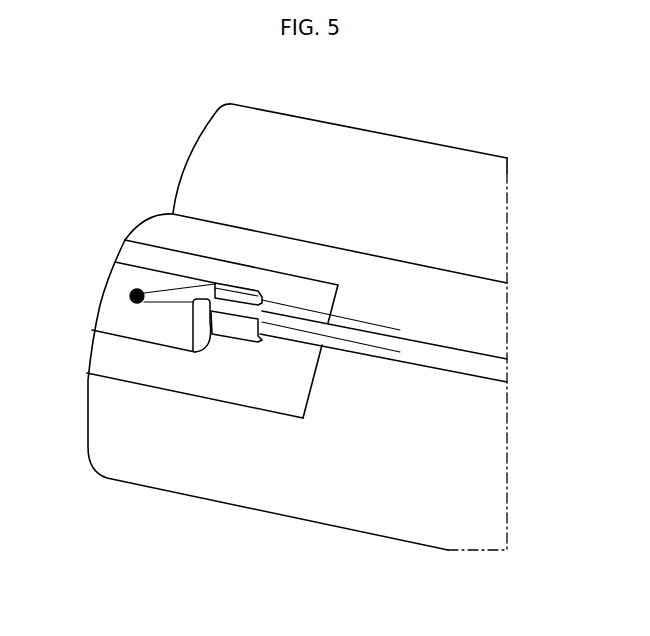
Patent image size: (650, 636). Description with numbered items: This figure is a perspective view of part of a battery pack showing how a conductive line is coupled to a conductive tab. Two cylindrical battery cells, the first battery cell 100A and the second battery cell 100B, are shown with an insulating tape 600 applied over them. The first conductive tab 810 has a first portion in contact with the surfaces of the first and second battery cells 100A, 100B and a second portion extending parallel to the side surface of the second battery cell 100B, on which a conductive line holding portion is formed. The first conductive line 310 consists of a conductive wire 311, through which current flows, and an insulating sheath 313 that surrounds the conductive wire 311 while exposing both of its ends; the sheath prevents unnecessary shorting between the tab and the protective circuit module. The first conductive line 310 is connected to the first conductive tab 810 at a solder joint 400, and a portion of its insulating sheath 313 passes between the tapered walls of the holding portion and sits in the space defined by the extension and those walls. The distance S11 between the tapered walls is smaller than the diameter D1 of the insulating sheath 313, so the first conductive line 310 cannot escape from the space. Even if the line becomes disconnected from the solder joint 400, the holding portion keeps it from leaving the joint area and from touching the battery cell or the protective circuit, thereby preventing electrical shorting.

The first battery cell 100A is at (340, 327).
The second battery cell 100B is at (297, 395).
The insulating tape 600 is at (145, 252).
The solder joint 400 is at (133, 291).
The first conductive tab 810 is at (93, 297).
The first conductive line 310 is at (174, 436).
The conductive wire 311 is at (170, 303).
The insulating sheath 313 is at (202, 310).
The distance between the tapered walls S11 is at (350, 368).
The diameter of the insulating sheath D1 is at (537, 420).